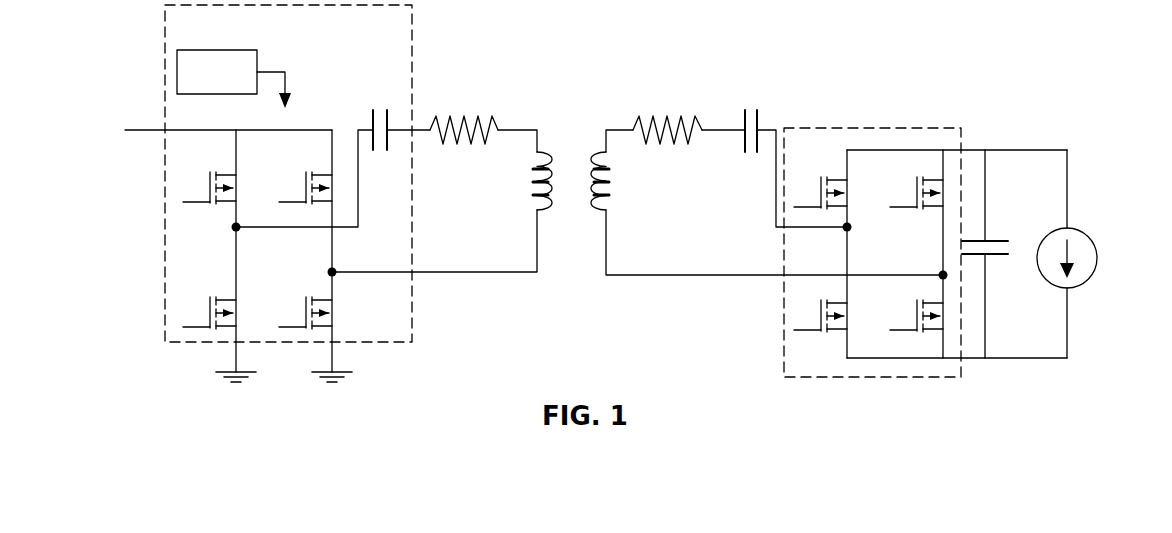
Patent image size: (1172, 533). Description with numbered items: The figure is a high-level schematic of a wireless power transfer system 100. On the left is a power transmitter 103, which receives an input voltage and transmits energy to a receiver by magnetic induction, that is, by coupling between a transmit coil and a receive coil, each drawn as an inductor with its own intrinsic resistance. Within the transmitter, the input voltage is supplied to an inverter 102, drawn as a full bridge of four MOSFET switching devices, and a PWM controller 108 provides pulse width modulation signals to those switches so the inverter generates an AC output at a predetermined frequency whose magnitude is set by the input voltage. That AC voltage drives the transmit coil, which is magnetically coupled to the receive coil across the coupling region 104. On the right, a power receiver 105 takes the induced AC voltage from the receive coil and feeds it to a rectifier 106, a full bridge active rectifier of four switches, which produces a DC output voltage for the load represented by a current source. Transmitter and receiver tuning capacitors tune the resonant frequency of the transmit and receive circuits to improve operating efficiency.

The wireless power transfer system 100 is at (551, 92).
The inverter 102 is at (191, 343).
The power transmitter (PTx) 103 is at (104, 165).
The transformer / coupled coils L1 and L2 104 is at (562, 293).
The power receiver (PRx) 105 is at (689, 328).
The rectifier 106 is at (784, 342).
The PWM controller 108 is at (222, 50).